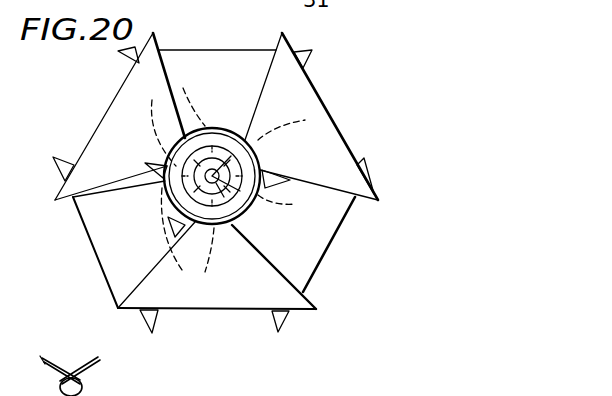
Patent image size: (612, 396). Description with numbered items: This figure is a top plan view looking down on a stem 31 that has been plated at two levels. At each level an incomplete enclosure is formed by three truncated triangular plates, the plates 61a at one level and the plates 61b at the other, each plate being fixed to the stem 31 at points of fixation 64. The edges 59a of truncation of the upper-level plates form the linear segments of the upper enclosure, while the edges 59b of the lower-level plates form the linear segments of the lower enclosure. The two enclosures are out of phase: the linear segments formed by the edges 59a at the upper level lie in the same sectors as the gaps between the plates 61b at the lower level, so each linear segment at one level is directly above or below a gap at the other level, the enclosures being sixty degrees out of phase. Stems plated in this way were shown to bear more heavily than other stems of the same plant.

The stem 31 is at (242, 138).
The edges 59a is at (157, 160).
The edges 59b is at (158, 200).
The truncated triangular plates 61a is at (101, 122).
The truncated triangular plates 61b is at (222, 50).
The points of fixation 64 is at (172, 100).